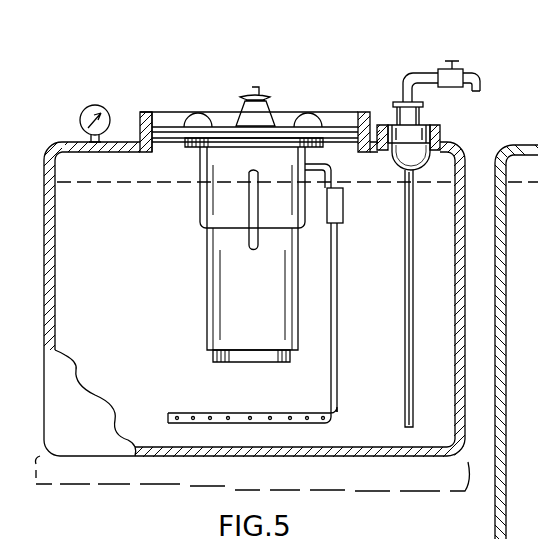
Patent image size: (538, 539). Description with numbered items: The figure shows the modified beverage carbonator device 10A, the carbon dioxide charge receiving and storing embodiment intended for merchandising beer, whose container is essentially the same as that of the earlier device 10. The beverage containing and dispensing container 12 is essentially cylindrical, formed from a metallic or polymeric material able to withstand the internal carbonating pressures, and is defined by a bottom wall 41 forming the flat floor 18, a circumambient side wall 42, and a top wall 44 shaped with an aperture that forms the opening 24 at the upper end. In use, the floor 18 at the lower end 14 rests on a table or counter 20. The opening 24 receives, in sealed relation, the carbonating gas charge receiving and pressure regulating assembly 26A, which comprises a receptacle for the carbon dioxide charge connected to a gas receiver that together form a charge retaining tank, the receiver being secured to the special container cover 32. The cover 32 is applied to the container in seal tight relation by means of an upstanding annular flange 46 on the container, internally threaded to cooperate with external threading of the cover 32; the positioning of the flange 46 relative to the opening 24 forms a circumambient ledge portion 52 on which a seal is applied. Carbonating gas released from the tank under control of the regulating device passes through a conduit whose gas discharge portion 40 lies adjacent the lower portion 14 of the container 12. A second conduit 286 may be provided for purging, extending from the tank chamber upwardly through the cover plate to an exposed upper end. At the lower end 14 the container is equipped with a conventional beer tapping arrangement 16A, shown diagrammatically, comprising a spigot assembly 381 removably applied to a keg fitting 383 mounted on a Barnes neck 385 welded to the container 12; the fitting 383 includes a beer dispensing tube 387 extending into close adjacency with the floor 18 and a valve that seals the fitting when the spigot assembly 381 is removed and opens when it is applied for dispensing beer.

The modified beverage carbonator device 10A is at (58, 130).
The device 10 is at (509, 308).
The container 12 is at (44, 296).
The lower end 14 is at (112, 437).
The tapping arrangement 16A is at (474, 63).
The flat bottom portion or floor 18 is at (226, 458).
The table or counter 20 is at (67, 474).
The opening 24 is at (181, 164).
The carbonating gas charge receiving and pressure regulating assembly 26A is at (192, 311).
The second conduit 286 is at (252, 220).
The container cover 32 is at (290, 123).
The gas discharge portion 40 is at (282, 420).
The bottom wall 41 is at (261, 456).
The circumambient side wall 42 is at (44, 256).
The top wall 44 is at (125, 143).
The upstanding annular flange 46 is at (376, 120).
The circumambient ledge portion 52 is at (375, 152).
The spigot assembly 381 is at (440, 69).
The keg fitting 383 is at (422, 148).
The Barnes neck 385 is at (422, 140).
The beer dispensing tube 387 is at (412, 278).